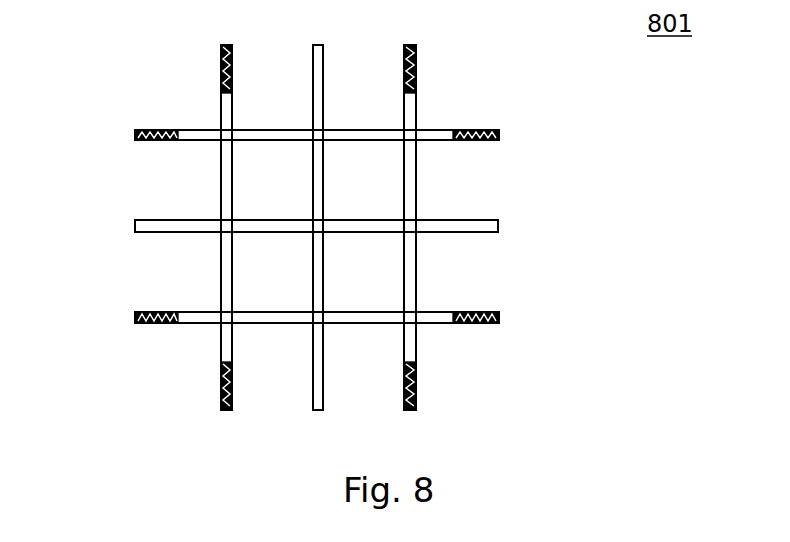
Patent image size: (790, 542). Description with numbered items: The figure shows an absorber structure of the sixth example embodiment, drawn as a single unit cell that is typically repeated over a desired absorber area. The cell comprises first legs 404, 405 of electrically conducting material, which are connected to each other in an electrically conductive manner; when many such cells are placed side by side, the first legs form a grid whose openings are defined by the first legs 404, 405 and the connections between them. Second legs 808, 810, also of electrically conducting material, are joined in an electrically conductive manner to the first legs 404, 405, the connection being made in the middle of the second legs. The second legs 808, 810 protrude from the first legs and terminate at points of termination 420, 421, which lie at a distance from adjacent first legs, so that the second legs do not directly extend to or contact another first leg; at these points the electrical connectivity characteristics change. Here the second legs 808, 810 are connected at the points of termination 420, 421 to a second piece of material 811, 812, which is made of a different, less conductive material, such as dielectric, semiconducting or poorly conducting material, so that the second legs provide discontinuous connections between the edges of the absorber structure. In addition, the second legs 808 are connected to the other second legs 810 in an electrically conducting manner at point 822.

The first leg 405 is at (313, 44).
The first leg 404 is at (498, 230).
The point of termination 421 is at (167, 140).
The second piece of material 812 is at (137, 130).
The second leg 808 is at (210, 128).
The point 822 is at (217, 310).
The second leg 810 is at (221, 345).
The second piece of material 811 is at (221, 400).
The point of termination 420 is at (228, 368).